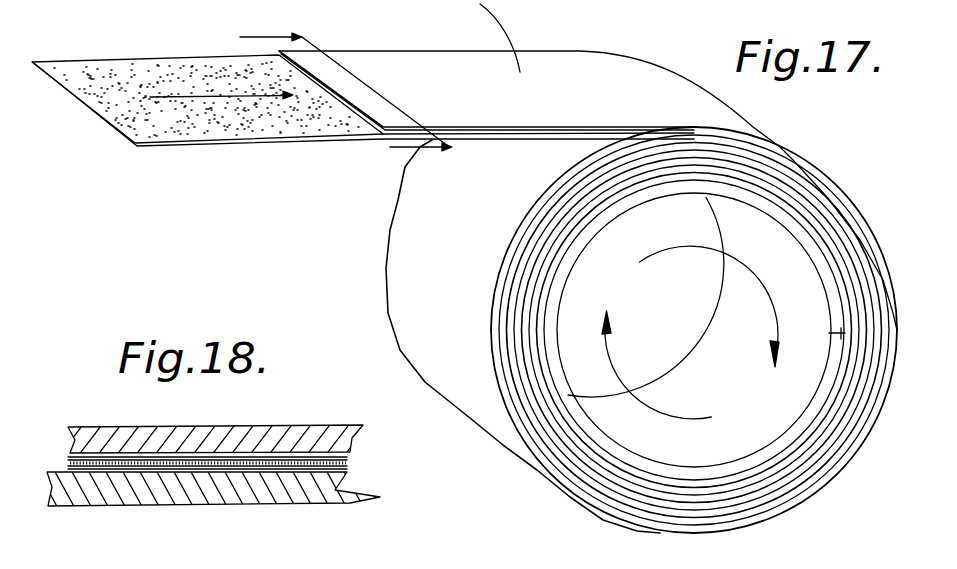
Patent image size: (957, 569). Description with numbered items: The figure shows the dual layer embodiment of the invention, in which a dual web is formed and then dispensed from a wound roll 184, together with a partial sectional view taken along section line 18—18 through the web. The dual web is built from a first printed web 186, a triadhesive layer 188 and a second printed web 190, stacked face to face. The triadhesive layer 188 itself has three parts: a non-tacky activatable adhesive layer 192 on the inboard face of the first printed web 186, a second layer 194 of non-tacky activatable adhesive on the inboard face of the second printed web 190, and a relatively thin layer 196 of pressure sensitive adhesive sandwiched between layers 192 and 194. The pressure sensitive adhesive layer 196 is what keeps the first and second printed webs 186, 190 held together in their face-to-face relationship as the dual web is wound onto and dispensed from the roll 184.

In FIG. 17, the section line 18— 18 is at (327, 97).
In FIG. 17, the roll 184 is at (738, 512).
In FIG. 17, the first printed web 186 is at (375, 60).
In FIG. 18, the first printed web 186 is at (265, 424).
In FIG. 18, the triadhesive layer 188 is at (243, 465).
In FIG. 17, the second printed web 190 is at (202, 144).
In FIG. 18, the second printed web 190 is at (233, 503).
In FIG. 18, the non-tacky activatable adhesive layer 192 is at (348, 456).
In FIG. 18, the second layer of non-tacky activatable adhesive 194 is at (348, 468).
In FIG. 18, the layer of pressure sensitive adhesive 196 is at (347, 465).